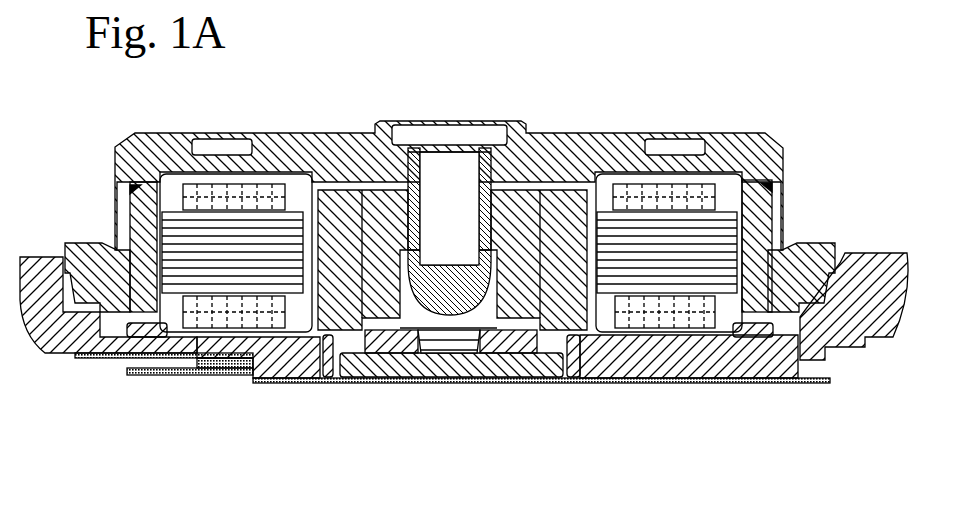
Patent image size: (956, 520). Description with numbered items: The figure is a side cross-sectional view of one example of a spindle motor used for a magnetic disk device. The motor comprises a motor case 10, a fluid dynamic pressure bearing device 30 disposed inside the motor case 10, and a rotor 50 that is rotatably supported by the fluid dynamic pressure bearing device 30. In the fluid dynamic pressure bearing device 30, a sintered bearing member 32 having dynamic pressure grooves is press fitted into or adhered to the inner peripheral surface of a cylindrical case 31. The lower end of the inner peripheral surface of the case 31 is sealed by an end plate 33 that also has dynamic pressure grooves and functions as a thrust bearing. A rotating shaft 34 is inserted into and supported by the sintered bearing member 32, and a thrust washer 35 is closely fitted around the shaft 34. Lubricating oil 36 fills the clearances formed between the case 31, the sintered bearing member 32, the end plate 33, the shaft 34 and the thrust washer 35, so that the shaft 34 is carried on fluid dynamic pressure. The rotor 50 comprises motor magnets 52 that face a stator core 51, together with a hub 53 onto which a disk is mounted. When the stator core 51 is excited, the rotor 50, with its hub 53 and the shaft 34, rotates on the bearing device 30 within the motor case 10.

The motor case 10 is at (92, 338).
The fluid dynamic pressure bearing device 30 is at (444, 403).
The cylindrical case 31 is at (340, 338).
The sintered bearing member 32 is at (368, 355).
The end plate 33 is at (400, 367).
The rotating shaft 34 is at (460, 317).
The thrust washer 35 is at (500, 360).
The lubricating oil 36 is at (472, 385).
The rotor 50 is at (580, 363).
The stator core 51 is at (660, 277).
The motor magnets 52 is at (753, 303).
The hub 53 is at (783, 302).